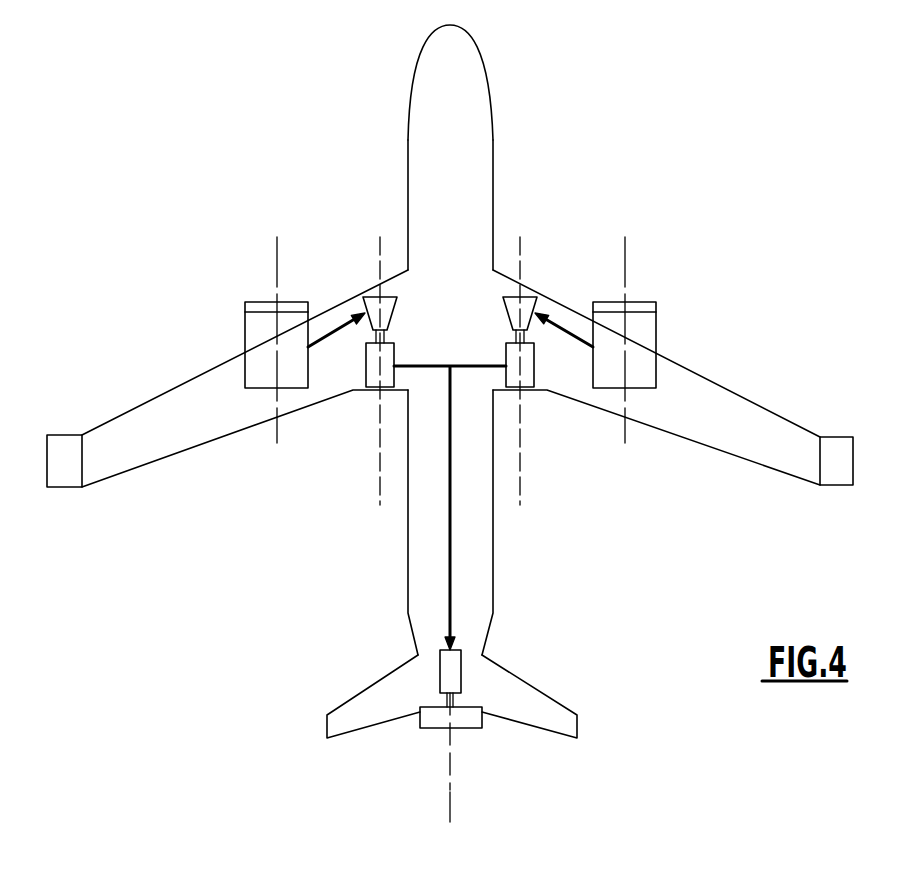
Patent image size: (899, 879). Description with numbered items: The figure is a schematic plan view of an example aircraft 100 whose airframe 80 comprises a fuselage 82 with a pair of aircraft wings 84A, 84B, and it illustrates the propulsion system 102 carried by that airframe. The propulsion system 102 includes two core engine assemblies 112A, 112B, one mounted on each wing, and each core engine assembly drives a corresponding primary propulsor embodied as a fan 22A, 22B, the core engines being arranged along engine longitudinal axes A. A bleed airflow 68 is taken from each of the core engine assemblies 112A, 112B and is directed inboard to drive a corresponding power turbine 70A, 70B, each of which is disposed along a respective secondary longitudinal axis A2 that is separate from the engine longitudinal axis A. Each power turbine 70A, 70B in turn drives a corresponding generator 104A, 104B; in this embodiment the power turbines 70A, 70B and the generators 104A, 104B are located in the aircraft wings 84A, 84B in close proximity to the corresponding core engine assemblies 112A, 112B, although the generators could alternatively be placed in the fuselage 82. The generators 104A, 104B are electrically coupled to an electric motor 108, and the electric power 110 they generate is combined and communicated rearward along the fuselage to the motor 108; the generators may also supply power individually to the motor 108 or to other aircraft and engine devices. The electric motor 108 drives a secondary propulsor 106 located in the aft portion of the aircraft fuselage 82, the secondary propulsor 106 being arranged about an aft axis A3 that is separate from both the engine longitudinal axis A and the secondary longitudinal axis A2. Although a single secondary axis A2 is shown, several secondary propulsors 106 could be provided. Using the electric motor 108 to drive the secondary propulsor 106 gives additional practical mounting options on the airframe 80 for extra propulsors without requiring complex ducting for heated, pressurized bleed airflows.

The aircraft 100 is at (780, 110).
The airframe 80 is at (496, 68).
The aircraft fuselage 82 is at (468, 133).
The aircraft wing 84A is at (127, 450).
The aircraft wing 84B is at (777, 450).
The propulsion system 102 is at (160, 315).
The fan 22A is at (252, 286).
The fan 22B is at (648, 286).
The power turbine 70A is at (372, 300).
The power turbine 70B is at (530, 298).
The bleed airflow 68 is at (333, 328).
The generator 104A is at (367, 376).
The generator 104B is at (530, 375).
The electric power 110 is at (452, 543).
The electric motor 108 is at (452, 673).
The secondary propulsor 106 is at (441, 720).
The core engine assembly 112A is at (234, 389).
The core engine assembly 112B is at (670, 389).
The engine longitudinal axis A is at (522, 237).
The secondary longitudinal axis A2 is at (380, 237).
The aft axis A3 is at (452, 797).